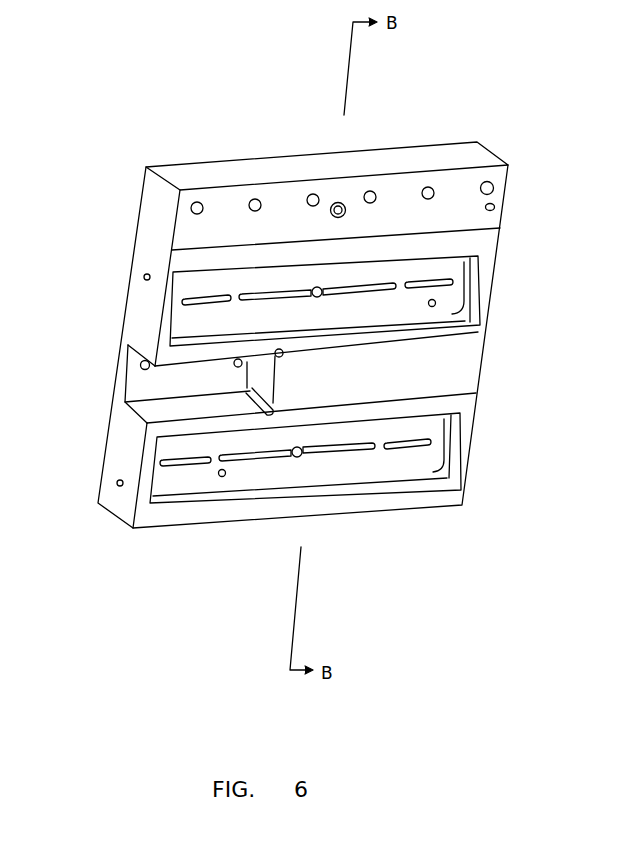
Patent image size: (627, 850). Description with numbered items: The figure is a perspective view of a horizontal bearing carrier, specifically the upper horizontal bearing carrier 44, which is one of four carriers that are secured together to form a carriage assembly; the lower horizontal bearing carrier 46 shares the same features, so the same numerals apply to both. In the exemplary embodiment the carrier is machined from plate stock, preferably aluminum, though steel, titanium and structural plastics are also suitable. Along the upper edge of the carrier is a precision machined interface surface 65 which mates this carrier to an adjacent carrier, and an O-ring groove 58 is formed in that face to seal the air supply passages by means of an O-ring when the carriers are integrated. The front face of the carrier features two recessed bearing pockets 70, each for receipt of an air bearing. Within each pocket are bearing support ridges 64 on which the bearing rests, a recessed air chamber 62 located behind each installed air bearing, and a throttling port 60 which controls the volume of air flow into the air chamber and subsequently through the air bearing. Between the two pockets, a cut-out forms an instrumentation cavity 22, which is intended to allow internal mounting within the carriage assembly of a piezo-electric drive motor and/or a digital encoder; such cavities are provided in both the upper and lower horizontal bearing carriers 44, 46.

The instrumentation cavity 22 is at (170, 378).
The upper horizontal bearing carrier 44 is at (500, 148).
The lower horizontal bearing carrier 46 is at (370, 324).
The O-ring groove 58 is at (338, 202).
The throttling port 60 is at (322, 289).
The recessed air chamber 62 is at (436, 303).
The bearing support ridges 64 is at (453, 273).
The interface surface 65 is at (503, 203).
The recessed bearing pocket 70 is at (480, 328).